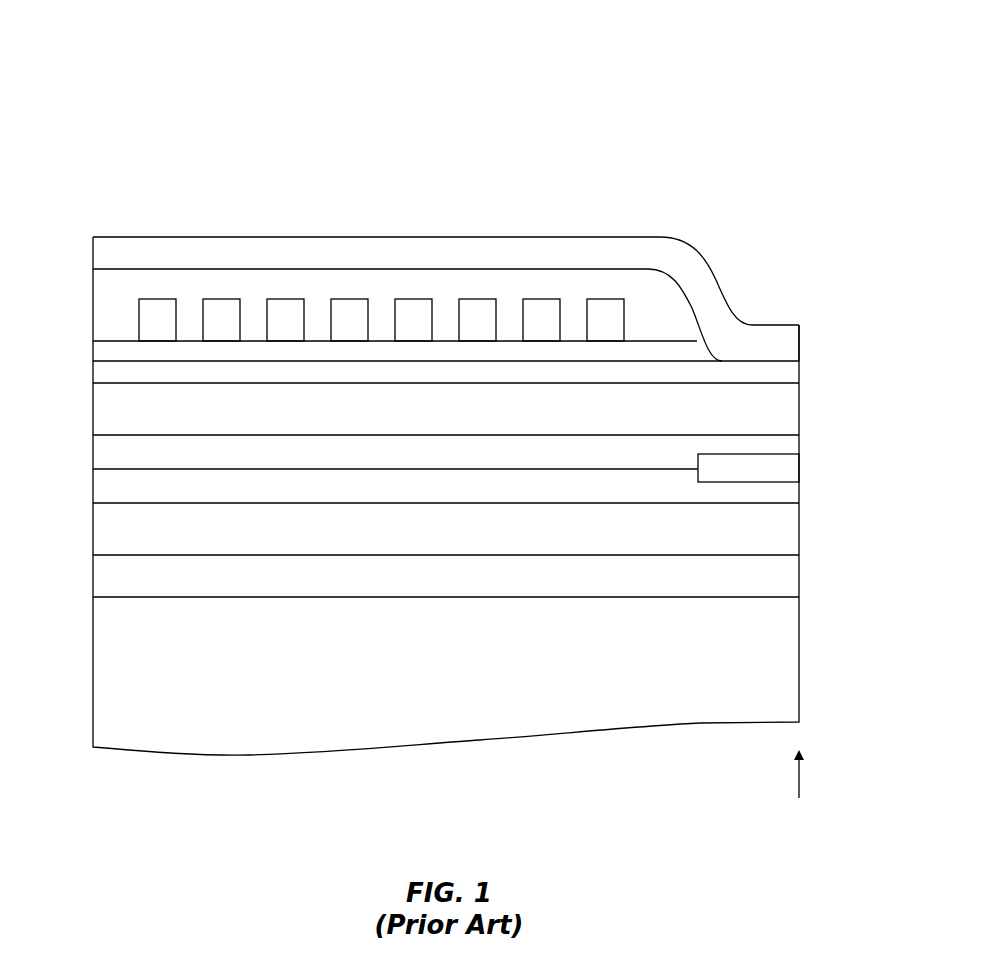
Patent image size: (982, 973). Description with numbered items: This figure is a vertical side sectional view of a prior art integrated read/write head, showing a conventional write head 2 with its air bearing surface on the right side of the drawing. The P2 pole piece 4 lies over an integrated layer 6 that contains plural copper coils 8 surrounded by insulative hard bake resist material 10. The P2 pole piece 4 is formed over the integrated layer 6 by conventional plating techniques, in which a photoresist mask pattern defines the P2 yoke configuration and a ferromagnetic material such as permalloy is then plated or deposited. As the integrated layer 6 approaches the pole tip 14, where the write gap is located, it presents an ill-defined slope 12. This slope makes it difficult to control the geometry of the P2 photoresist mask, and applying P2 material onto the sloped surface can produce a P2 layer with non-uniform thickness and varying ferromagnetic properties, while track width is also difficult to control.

The prior art write head 2 is at (112, 58).
The P2 pole piece 4 is at (93, 250).
The integrated layer 6 is at (93, 302).
The copper coils 8 is at (229, 299).
The insulative hard bake resist material 10 is at (540, 283).
The ill-defined slope 12 is at (642, 290).
The pole tip 14 is at (799, 345).